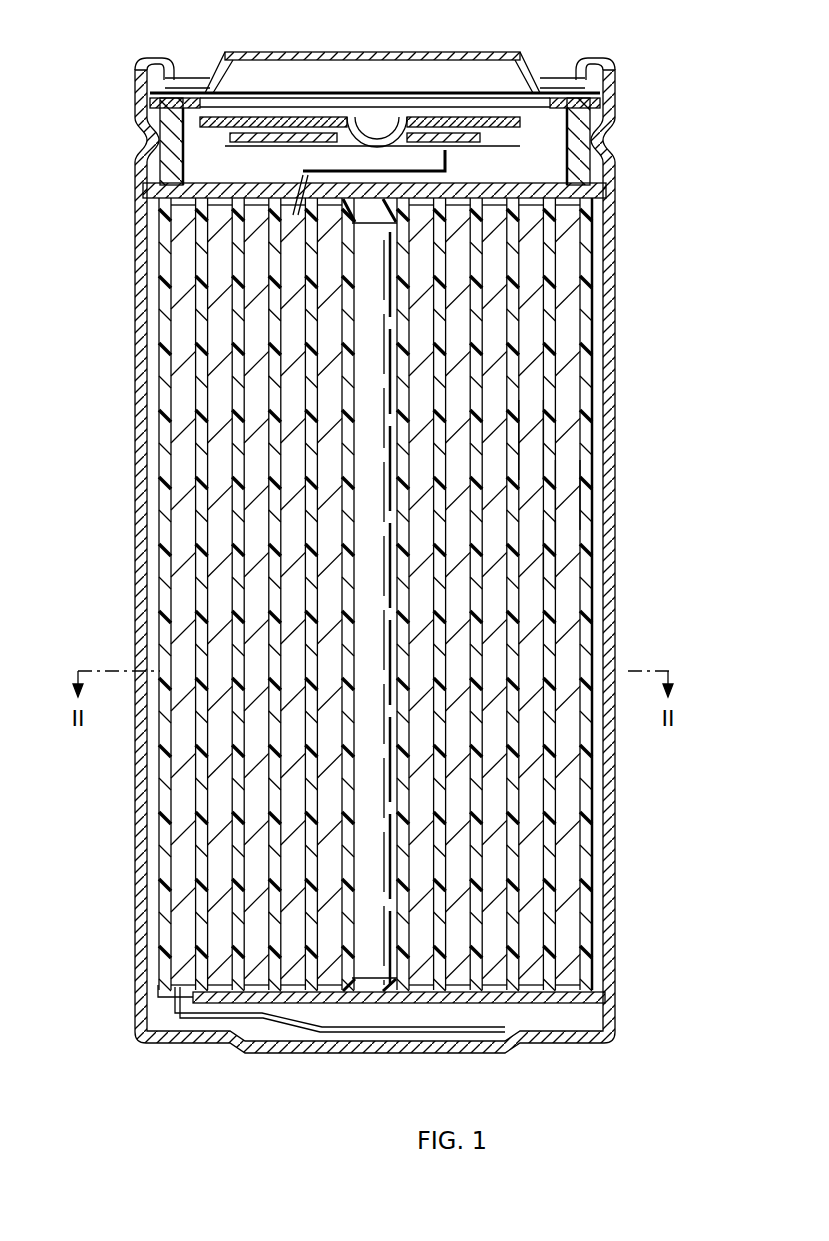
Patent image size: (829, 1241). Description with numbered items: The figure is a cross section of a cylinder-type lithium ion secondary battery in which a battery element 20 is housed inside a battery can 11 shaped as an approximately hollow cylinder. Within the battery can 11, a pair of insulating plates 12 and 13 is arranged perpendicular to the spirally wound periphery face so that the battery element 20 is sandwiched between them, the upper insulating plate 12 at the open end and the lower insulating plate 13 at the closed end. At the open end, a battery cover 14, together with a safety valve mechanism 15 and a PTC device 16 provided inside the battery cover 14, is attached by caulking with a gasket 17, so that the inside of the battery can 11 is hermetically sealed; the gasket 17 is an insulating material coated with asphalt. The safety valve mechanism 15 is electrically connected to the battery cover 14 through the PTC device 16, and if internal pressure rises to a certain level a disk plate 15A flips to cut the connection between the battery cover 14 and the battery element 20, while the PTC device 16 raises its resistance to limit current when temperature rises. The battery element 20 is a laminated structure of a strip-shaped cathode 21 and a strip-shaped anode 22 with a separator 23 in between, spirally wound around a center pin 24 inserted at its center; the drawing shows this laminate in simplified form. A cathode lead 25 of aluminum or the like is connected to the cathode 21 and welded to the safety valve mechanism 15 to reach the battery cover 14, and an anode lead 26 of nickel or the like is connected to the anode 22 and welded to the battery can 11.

The battery can 11 is at (617, 245).
The insulating plate 12 is at (610, 190).
The insulating plate 13 is at (608, 1000).
The battery cover 14 is at (343, 52).
The safety valve mechanism 15 is at (490, 110).
The disk plate 15A is at (450, 123).
The PTC device 16 is at (612, 100).
The gasket 17 is at (608, 155).
The battery element 20 is at (592, 360).
The cathode 21 is at (535, 440).
The anode 22 is at (566, 493).
The separator 23 is at (553, 562).
The center pin 24 is at (367, 612).
The cathode lead 25 is at (352, 130).
The anode lead 26 is at (274, 1022).